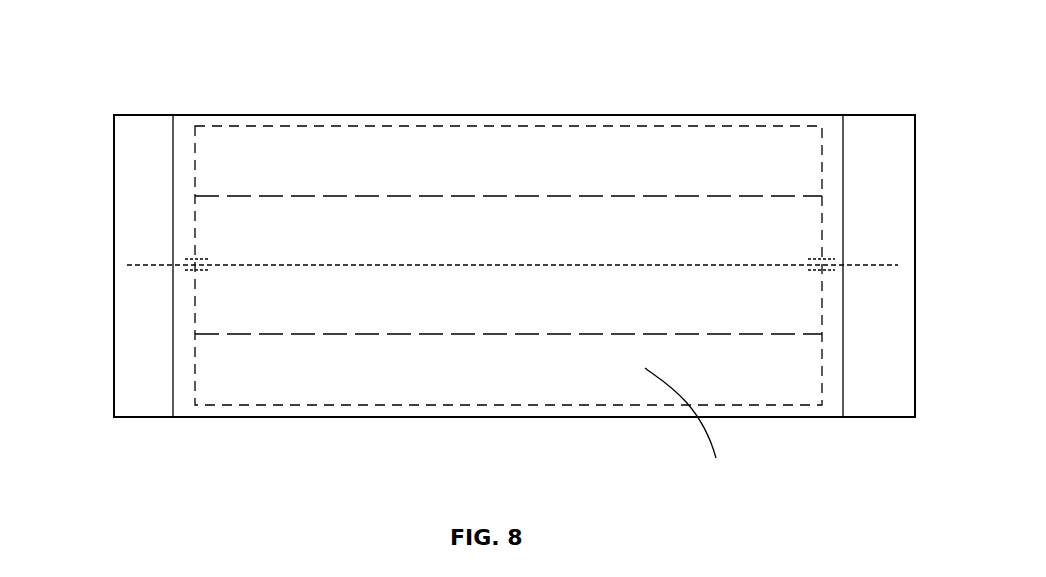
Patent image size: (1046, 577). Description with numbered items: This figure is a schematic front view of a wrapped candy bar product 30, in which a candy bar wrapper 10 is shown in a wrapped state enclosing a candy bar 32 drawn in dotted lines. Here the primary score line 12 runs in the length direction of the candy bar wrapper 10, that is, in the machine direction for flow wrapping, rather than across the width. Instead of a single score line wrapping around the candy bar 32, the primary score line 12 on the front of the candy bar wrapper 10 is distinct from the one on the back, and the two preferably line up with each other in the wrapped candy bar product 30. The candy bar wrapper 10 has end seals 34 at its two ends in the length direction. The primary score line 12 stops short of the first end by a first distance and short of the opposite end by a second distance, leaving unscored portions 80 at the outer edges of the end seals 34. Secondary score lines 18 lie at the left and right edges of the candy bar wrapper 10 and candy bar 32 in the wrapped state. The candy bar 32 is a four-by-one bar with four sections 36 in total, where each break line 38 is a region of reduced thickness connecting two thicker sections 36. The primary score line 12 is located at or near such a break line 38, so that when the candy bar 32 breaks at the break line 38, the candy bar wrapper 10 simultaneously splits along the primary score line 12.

The candy bar wrapper 10 is at (264, 115).
The primary score line 12 is at (870, 262).
The secondary score lines 18 is at (827, 270).
The wrapped candy bar product 30 is at (608, 80).
The candy bar 32 is at (385, 405).
The end seals 34 is at (155, 204).
The section 36 is at (690, 428).
The break line 38 is at (528, 334).
The unscored portions 80 is at (120, 265).